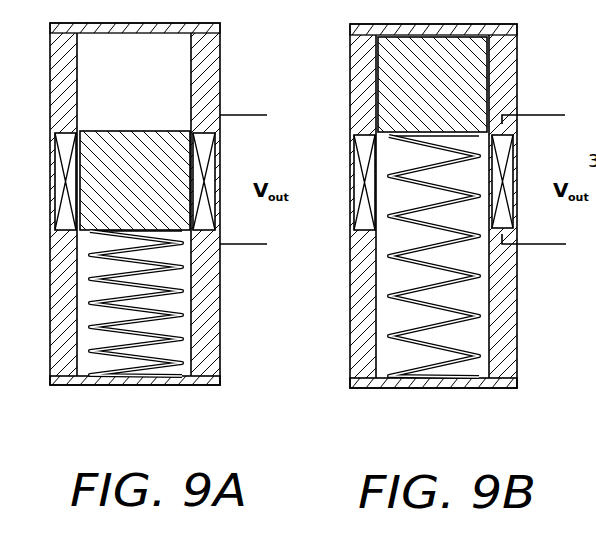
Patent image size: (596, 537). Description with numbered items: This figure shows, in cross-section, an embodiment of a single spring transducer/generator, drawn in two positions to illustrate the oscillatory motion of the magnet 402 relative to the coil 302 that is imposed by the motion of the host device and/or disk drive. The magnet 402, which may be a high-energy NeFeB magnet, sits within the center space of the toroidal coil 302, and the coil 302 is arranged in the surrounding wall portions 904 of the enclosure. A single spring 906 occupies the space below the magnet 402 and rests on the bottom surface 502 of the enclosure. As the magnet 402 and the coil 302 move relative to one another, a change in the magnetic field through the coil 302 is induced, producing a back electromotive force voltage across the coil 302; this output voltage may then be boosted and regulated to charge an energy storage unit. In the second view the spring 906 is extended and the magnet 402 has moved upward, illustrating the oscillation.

In FIG. 9A, the coil 302 is at (53, 178).
In FIG. 9B, the coil 302 is at (358, 192).
In FIG. 9A, the magnet 402 is at (97, 138).
In FIG. 9B, the magnet 402 is at (384, 107).
In FIG. 9A, the bottom surface 502 is at (157, 386).
In FIG. 9B, the bottom surface 502 is at (499, 388).
In FIG. 9A, the housing 904 is at (60, 310).
In FIG. 9B, the housing 904 is at (359, 313).
In FIG. 9A, the single spring 906 is at (167, 335).
In FIG. 9B, the single spring 906 is at (471, 310).